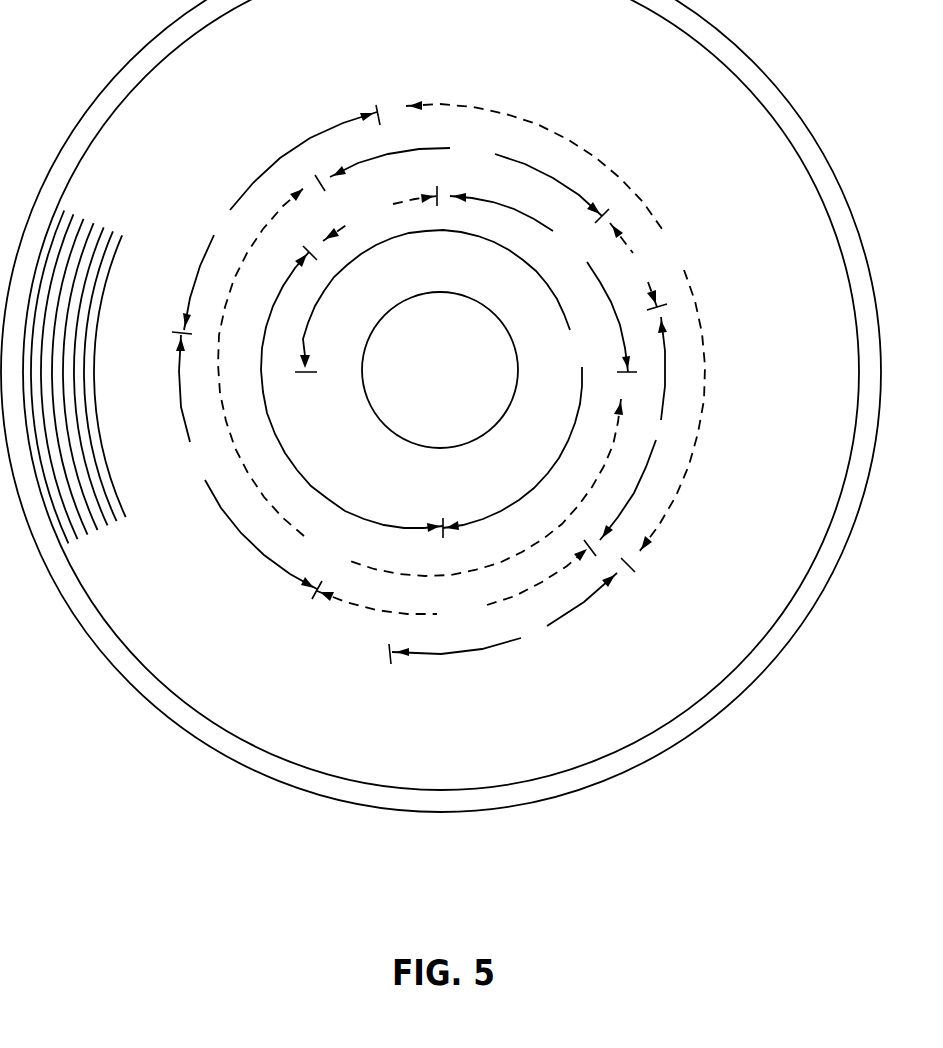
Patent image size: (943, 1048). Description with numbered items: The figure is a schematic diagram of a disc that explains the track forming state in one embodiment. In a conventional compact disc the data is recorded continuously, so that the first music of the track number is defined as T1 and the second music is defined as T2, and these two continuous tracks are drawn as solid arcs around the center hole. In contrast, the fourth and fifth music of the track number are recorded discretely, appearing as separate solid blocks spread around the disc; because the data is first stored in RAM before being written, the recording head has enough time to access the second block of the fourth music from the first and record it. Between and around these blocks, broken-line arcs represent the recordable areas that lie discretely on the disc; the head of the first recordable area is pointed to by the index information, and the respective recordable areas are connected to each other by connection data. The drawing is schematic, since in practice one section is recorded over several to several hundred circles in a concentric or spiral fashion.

The first music of the track number T1 is at (446, 380).
The second music of the track number T2 is at (352, 392).